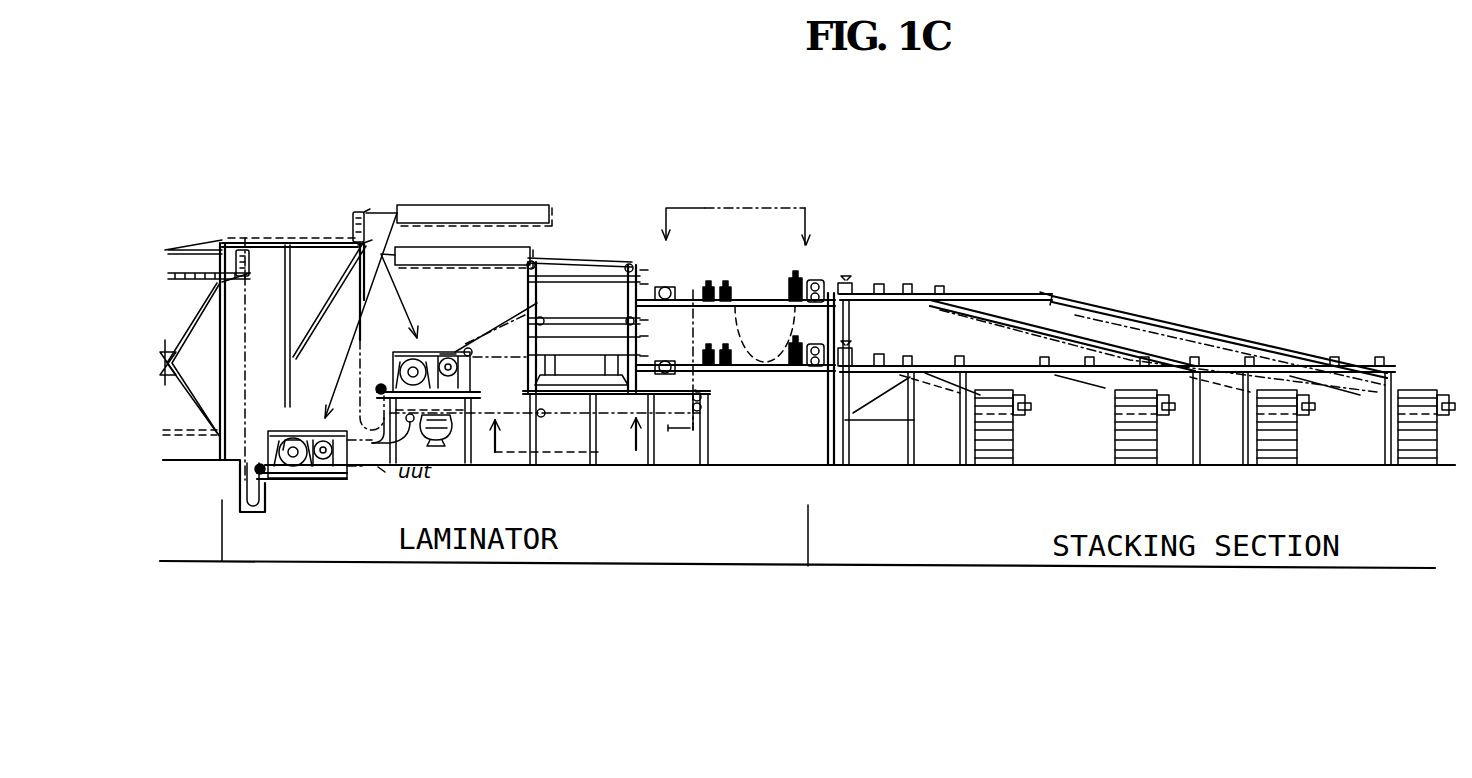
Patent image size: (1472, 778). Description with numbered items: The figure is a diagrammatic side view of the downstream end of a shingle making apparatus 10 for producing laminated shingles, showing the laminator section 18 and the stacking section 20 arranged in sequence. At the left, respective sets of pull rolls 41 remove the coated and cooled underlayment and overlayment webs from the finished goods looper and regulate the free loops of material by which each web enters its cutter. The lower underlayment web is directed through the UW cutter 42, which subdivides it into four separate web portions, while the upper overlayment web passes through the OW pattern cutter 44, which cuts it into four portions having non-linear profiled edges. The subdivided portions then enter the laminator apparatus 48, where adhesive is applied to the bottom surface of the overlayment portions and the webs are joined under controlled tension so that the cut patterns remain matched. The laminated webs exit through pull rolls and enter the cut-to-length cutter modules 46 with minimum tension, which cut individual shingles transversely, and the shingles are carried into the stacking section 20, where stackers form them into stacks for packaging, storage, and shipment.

The shingle making apparatus 10 is at (1242, 180).
The laminator 18 is at (627, 228).
The stacking section 20 is at (1150, 301).
The pull rolls 41 is at (247, 258).
The UW cutter 42 is at (313, 484).
The OW pattern cutter 44 is at (432, 350).
The cut-to-length cutter modules 46 is at (827, 270).
The laminator apparatus 48 is at (712, 396).